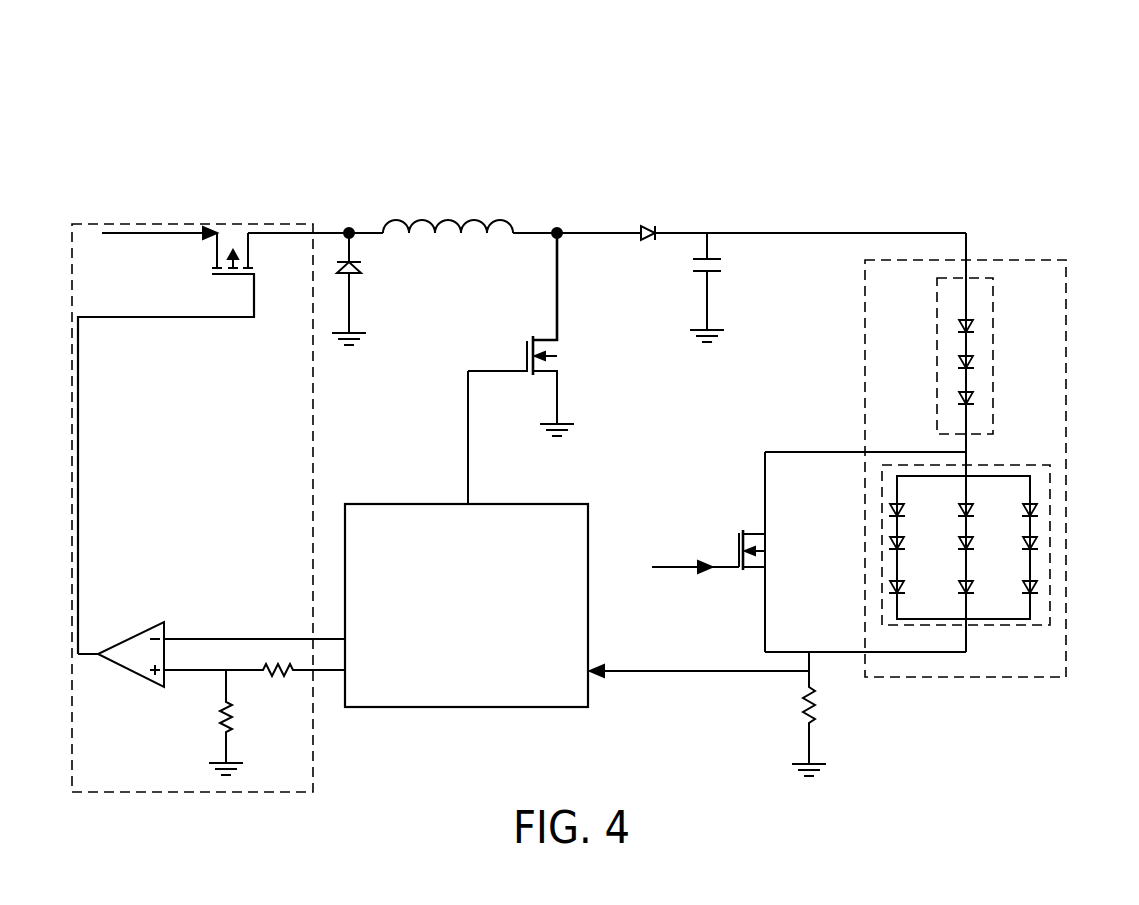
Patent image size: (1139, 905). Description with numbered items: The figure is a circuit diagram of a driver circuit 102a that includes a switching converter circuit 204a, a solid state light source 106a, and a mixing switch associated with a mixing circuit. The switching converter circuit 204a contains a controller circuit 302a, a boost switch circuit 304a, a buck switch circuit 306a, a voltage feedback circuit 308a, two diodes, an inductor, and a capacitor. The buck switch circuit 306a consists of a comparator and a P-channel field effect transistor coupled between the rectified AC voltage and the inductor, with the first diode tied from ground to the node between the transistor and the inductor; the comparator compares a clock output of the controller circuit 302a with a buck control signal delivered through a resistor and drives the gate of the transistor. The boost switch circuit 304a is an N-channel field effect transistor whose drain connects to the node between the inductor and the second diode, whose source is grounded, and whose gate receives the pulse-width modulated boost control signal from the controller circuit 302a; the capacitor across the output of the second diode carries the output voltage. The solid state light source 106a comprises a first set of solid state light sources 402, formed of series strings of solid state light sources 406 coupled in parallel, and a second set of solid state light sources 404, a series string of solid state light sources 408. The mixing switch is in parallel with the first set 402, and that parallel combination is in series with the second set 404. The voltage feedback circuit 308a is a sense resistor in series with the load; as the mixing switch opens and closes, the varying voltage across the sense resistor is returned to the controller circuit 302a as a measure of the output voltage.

The driver circuit 102a is at (402, 114).
The switching converter circuit 204a is at (521, 267).
The solid state light source 106a is at (878, 415).
The second set of solid state light sources 404 is at (968, 320).
The solid state light source 408 is at (960, 356).
The first set of solid state light sources 402 is at (944, 523).
The solid state light source 406 is at (1032, 516).
The boost switch circuit 304a is at (493, 336).
The controller circuit 302a is at (588, 504).
The buck switch circuit 306a is at (313, 772).
The voltage feedback circuit 308a is at (872, 715).